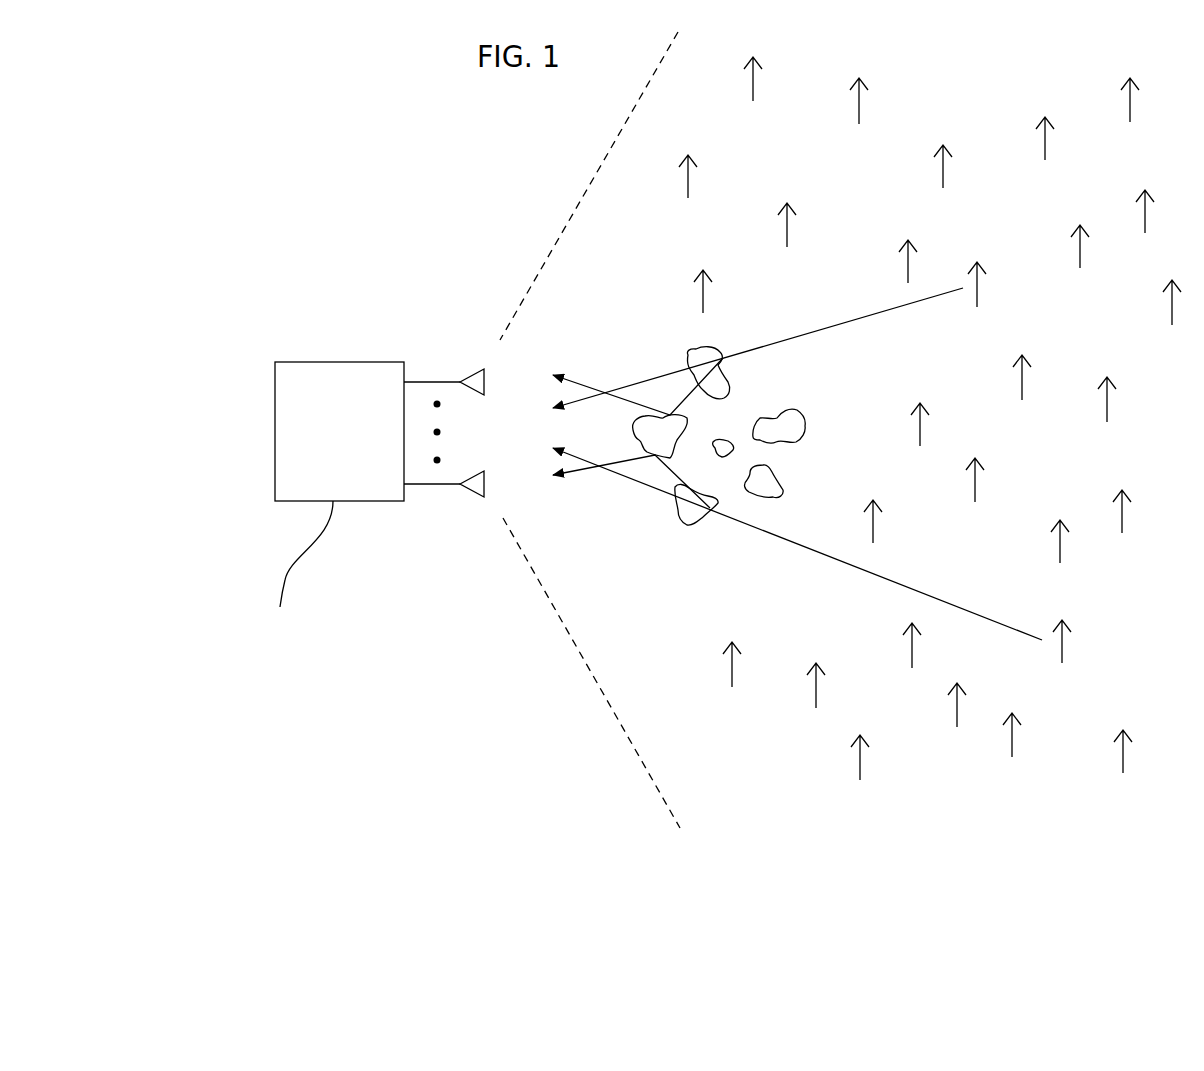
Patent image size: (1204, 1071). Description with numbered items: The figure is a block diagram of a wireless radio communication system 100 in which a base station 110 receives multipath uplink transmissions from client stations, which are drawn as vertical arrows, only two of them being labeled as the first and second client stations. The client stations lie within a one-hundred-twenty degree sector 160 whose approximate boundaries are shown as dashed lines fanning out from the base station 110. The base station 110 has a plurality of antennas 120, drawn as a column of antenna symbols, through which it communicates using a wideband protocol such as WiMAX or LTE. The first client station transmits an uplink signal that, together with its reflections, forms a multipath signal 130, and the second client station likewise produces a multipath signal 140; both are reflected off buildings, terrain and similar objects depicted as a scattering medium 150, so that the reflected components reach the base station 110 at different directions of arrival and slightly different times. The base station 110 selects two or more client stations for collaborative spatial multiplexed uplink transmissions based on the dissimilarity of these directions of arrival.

The wireless radio communication system 100 is at (267, 174).
The base station 110 is at (290, 362).
The antennas 120 is at (444, 433).
The multipath signal from CS1 130 is at (758, 351).
The multipath signal from CS2 140 is at (797, 544).
The scattering medium 150 is at (795, 398).
The sector 160 is at (594, 430).